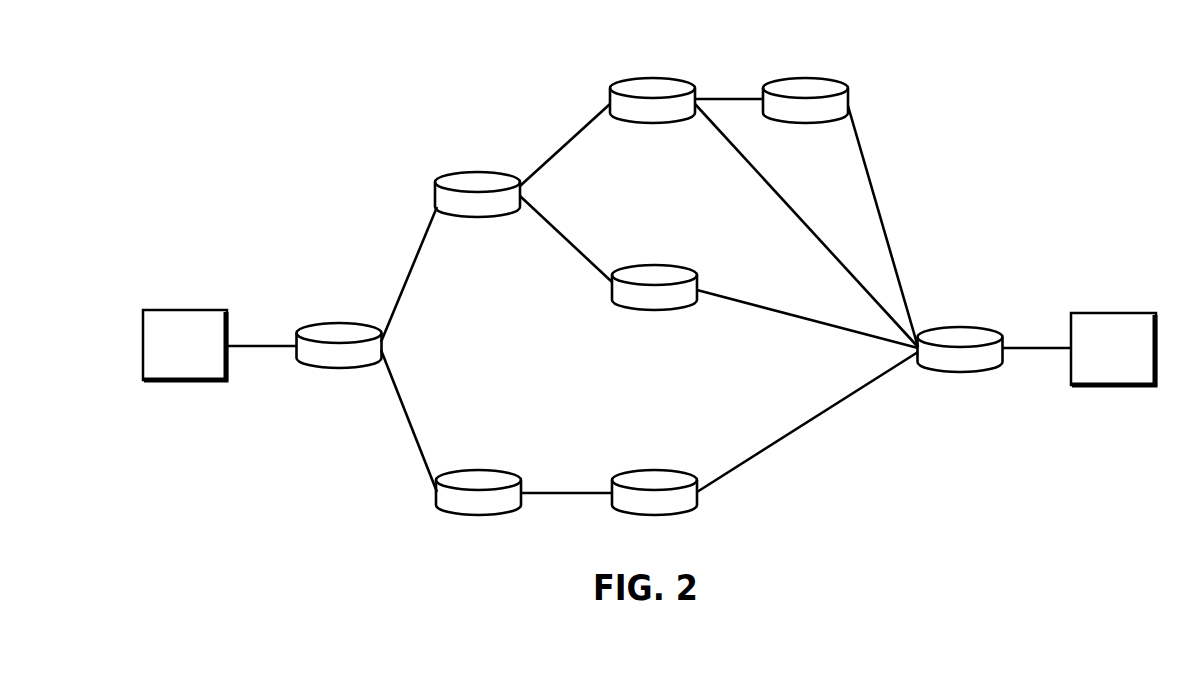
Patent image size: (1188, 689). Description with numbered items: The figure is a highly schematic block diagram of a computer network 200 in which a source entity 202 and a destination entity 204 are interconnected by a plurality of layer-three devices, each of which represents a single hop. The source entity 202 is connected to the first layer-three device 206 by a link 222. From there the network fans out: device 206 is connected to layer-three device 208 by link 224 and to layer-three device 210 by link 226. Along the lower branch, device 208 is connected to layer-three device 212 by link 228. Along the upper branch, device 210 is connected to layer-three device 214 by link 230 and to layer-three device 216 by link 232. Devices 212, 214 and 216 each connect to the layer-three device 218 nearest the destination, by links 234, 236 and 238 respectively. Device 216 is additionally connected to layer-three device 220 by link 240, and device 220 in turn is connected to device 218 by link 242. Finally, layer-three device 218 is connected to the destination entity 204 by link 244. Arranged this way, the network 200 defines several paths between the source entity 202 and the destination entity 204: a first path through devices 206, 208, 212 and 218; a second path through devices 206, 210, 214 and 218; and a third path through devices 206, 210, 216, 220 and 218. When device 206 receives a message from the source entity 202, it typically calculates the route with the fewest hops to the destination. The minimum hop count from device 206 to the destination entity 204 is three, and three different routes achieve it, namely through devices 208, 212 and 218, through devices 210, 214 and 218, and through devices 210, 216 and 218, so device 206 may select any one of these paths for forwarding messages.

The computer network 200 is at (366, 106).
The source entity 202 is at (186, 309).
The destination entity 204 is at (1115, 312).
The layer 3 device 206 is at (339, 321).
The layer 3 device 208 is at (480, 469).
The layer 3 device 210 is at (478, 171).
The layer 3 device 212 is at (655, 469).
The layer 3 device 214 is at (655, 264).
The layer 3 device 216 is at (653, 77).
The layer 3 device 218 is at (961, 326).
The layer 3 device 220 is at (806, 77).
The link 222 is at (272, 345).
The link 224 is at (419, 440).
The link 226 is at (416, 253).
The link 228 is at (567, 493).
The link 230 is at (580, 255).
The link 232 is at (563, 148).
The link 234 is at (838, 402).
The link 236 is at (748, 300).
The link 238 is at (738, 151).
The link 240 is at (740, 99).
The link 242 is at (861, 152).
The link 244 is at (1045, 348).